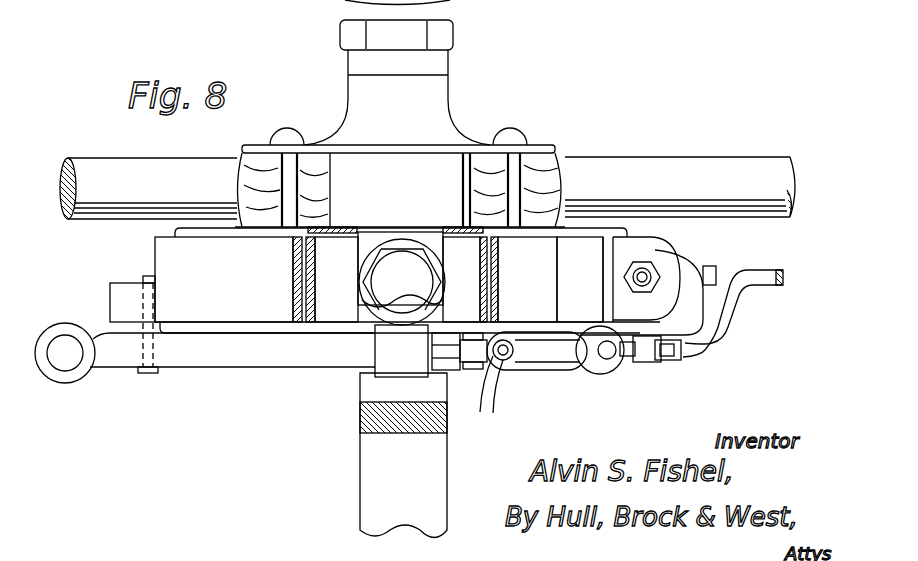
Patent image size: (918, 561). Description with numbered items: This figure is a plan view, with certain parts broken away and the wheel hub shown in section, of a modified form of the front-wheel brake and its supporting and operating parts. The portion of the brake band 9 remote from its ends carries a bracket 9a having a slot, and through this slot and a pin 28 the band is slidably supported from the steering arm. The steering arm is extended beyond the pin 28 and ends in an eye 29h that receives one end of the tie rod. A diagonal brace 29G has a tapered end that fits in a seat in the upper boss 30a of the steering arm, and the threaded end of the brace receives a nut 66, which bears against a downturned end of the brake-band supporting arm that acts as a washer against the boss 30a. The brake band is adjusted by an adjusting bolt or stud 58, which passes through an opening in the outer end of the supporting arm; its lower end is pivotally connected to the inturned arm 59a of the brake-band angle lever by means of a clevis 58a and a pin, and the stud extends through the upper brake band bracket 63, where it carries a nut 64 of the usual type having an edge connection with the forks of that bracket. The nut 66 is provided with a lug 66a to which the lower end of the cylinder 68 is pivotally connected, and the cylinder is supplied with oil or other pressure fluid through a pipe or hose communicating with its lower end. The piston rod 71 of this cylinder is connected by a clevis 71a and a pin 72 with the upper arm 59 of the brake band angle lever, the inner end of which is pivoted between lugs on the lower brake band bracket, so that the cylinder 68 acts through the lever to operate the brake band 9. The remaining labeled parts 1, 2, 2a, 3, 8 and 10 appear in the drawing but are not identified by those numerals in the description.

The tube 1 is at (562, 157).
The post 2 is at (403, 455).
The post section 2a is at (445, 268).
The nut 3 is at (402, 282).
The block 8 is at (316, 286).
The brake band 9 is at (224, 279).
The bracket 9a is at (118, 297).
The lining 10 is at (292, 298).
The pin 28 is at (158, 372).
The diagonal brace 29G is at (268, 353).
The eye 29h is at (76, 372).
The upper boss 30a is at (401, 351).
The adjusting bolt 58 is at (641, 286).
The clevis 58a is at (715, 268).
The upper arm of brake band angle lever 59 is at (723, 320).
The inturned arm of brake-band lever 59a is at (766, 270).
The upper brake band bracket 63 is at (641, 292).
The nut 64 is at (660, 270).
The nut 66 is at (450, 362).
The lug 66a is at (492, 375).
The cylinder 68 is at (555, 350).
The piston rod 71 is at (626, 360).
The clevis 71a is at (648, 363).
The pin 72 is at (672, 362).